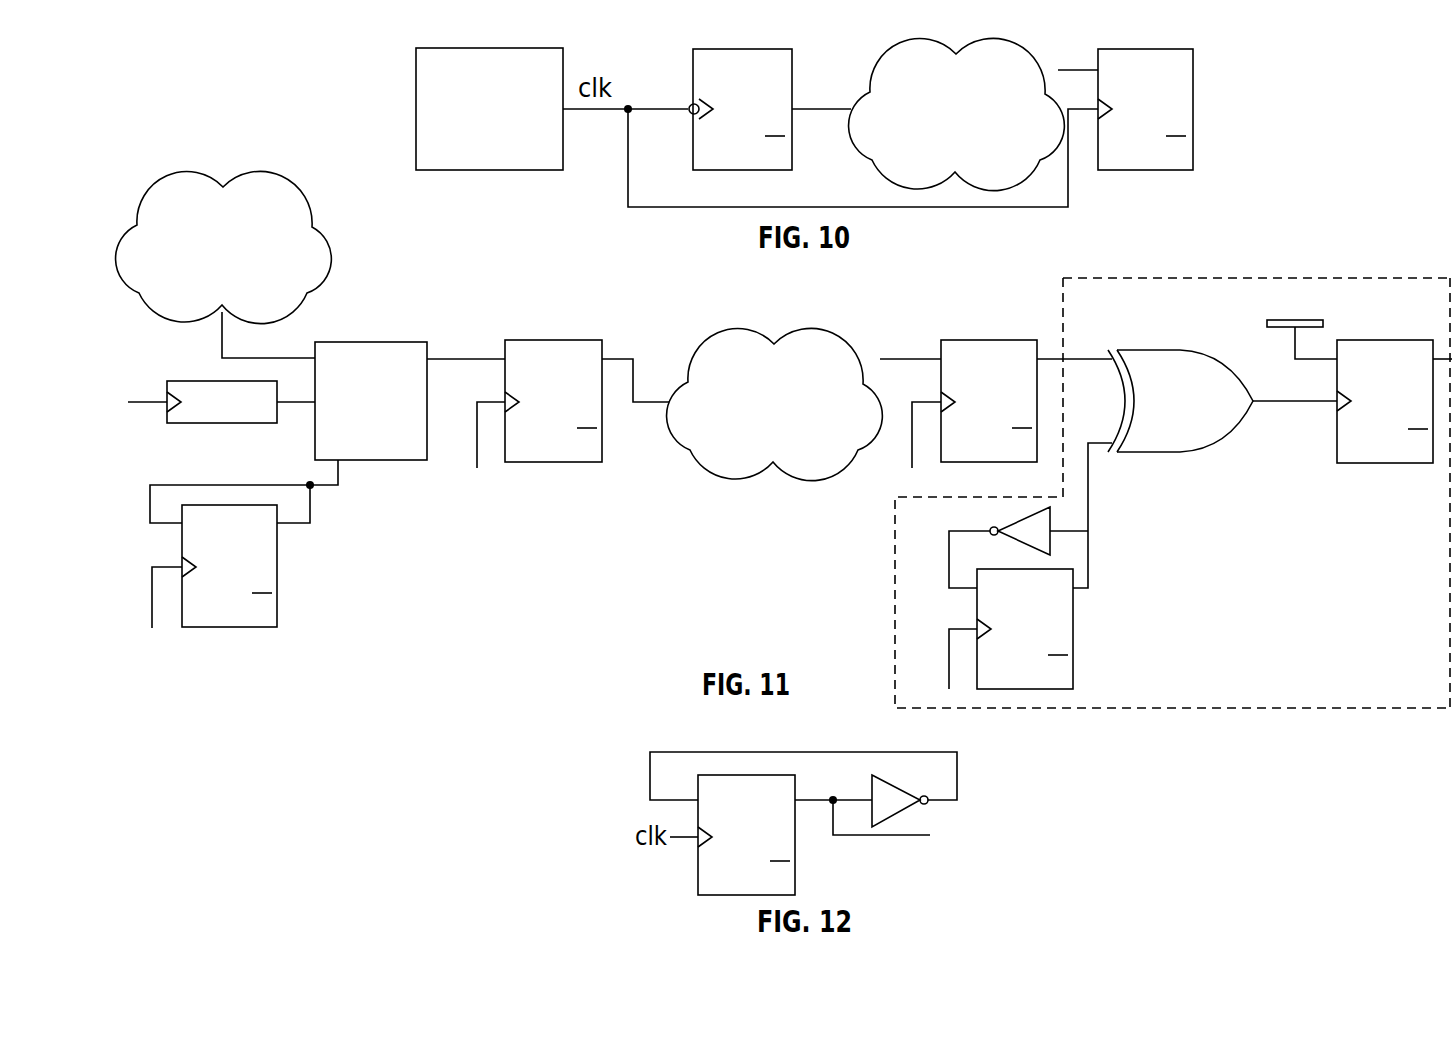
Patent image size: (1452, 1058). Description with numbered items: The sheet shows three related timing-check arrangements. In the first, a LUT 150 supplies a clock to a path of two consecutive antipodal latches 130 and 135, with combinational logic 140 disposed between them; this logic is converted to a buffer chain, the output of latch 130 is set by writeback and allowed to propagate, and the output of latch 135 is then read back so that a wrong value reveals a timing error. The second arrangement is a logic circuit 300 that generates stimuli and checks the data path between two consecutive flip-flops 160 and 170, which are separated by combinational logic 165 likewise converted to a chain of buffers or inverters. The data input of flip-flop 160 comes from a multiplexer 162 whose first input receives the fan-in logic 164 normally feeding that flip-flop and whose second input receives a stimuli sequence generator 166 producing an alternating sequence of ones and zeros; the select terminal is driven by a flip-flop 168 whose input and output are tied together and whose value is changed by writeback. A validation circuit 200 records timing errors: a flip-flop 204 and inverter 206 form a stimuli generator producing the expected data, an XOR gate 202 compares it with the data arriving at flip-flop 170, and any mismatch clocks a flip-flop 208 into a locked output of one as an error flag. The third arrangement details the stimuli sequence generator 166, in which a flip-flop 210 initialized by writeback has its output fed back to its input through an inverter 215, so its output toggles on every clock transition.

In FIG. 10, the latch 130 is at (743, 49).
In FIG. 10, the latch 135 is at (1148, 49).
In FIG. 10, the combinational logic 140 is at (1017, 43).
In FIG. 10, the look-up table (LUT) 150 is at (490, 170).
In FIG. 11, the flip-flop 160 is at (553, 340).
In FIG. 11, the multiplexer 162 is at (400, 460).
In FIG. 11, the fan-in logic block 164 is at (272, 166).
In FIG. 11, the combinational logic 165 is at (723, 473).
In FIG. 11, the stimuli sequence generator 166 is at (222, 423).
In FIG. 12, the stimuli sequence generator 166 is at (650, 777).
In FIG. 11, the flip-flop 168 is at (277, 565).
In FIG. 11, the flip-flop 170 is at (990, 340).
In FIG. 11, the validation circuit 200 is at (1335, 708).
In FIG. 11, the XOR gate 202 is at (1182, 453).
In FIG. 11, the flip-flop 204 is at (1073, 628).
In FIG. 11, the inverter 206 is at (996, 527).
In FIG. 11, the flip-flop 208 is at (1385, 463).
In FIG. 12, the flip-flop 210 is at (698, 877).
In FIG. 12, the inverter 215 is at (900, 810).
In FIG. 11, the logic circuit 300 is at (828, 300).